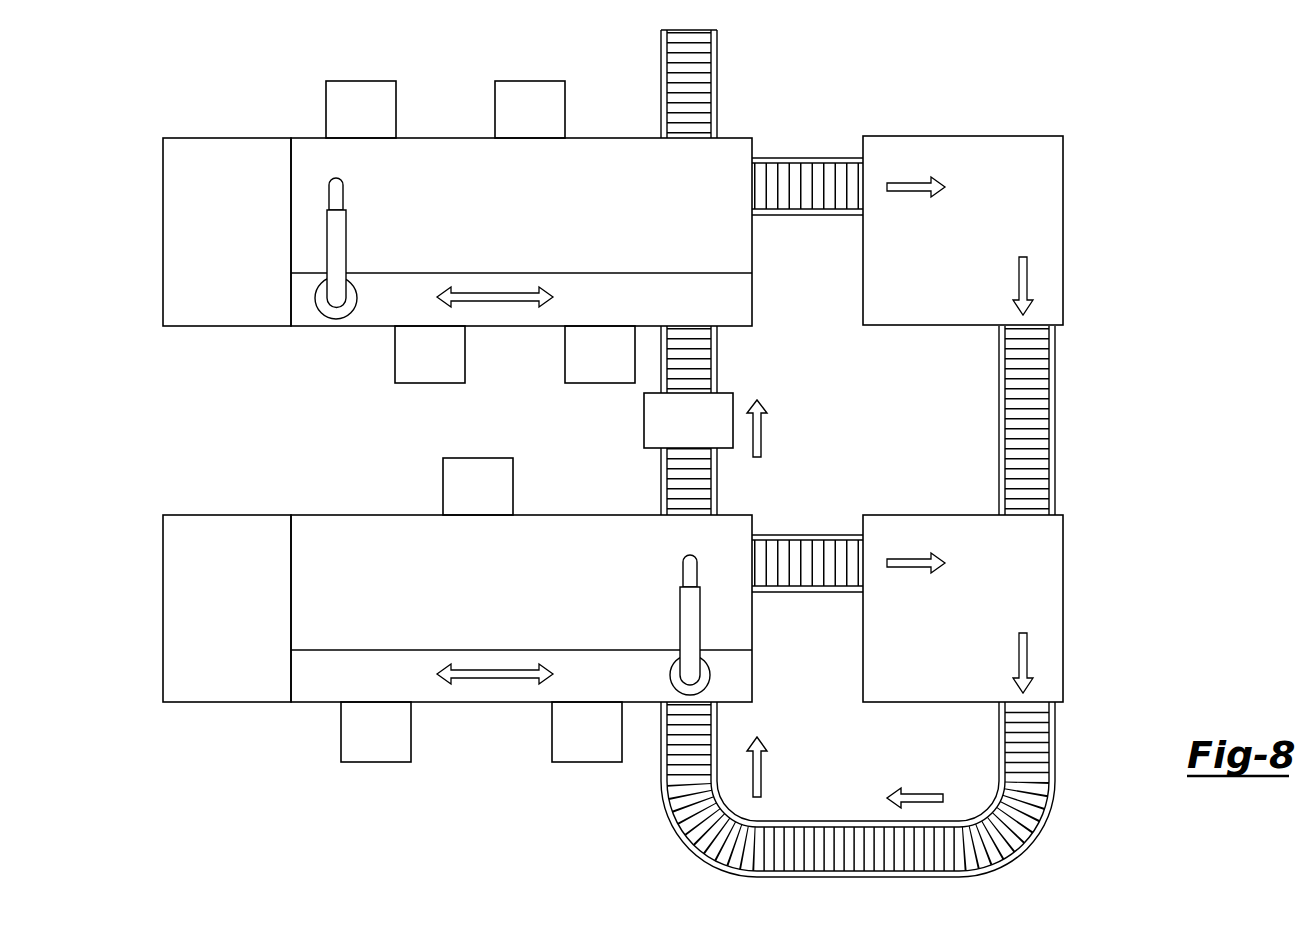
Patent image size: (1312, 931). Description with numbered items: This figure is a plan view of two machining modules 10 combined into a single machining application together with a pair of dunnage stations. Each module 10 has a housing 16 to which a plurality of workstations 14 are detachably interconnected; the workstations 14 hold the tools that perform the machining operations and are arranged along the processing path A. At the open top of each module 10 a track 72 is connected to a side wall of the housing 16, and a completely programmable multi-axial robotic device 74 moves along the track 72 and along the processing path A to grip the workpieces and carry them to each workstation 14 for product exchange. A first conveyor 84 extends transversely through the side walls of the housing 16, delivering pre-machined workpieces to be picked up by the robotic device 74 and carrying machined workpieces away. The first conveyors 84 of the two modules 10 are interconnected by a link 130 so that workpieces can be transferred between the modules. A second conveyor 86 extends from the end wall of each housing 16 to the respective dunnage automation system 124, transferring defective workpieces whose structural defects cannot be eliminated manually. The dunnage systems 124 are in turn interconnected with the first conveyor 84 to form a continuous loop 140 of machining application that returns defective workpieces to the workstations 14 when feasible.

The module 10 is at (110, 178).
The workstation 14 is at (383, 93).
The housing 16 is at (320, 150).
The track 72 is at (665, 287).
The multi-axial robotic device 74 is at (330, 241).
The first conveyor 84 is at (720, 97).
The second conveyor 86 is at (800, 157).
The dunnage automation system 124 is at (1055, 162).
The link 130 is at (645, 423).
The continuous loop 140 is at (1058, 373).